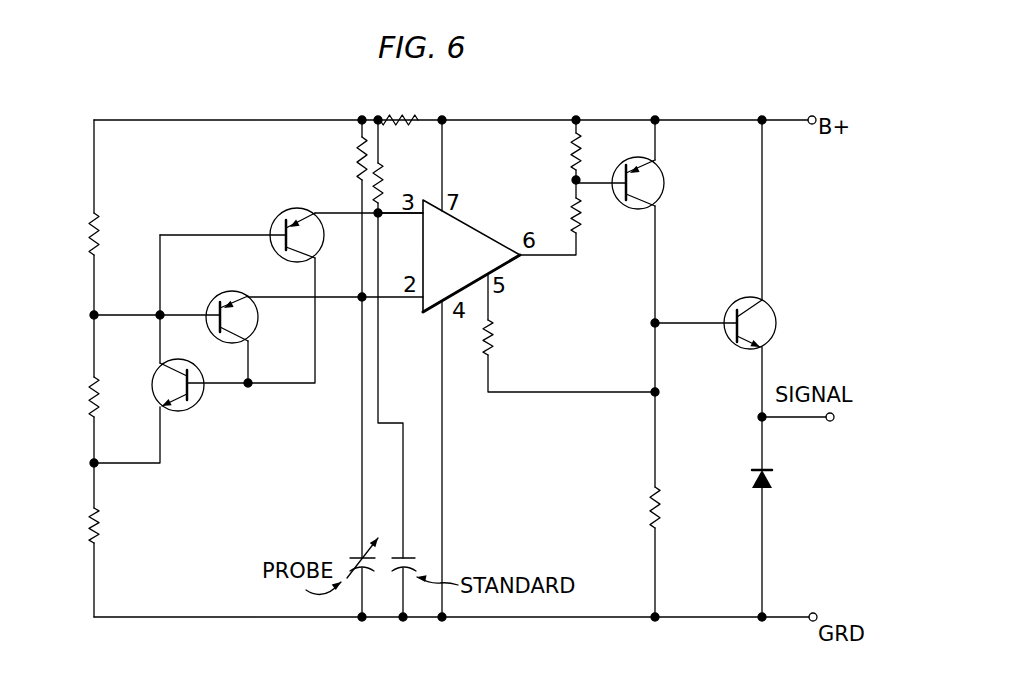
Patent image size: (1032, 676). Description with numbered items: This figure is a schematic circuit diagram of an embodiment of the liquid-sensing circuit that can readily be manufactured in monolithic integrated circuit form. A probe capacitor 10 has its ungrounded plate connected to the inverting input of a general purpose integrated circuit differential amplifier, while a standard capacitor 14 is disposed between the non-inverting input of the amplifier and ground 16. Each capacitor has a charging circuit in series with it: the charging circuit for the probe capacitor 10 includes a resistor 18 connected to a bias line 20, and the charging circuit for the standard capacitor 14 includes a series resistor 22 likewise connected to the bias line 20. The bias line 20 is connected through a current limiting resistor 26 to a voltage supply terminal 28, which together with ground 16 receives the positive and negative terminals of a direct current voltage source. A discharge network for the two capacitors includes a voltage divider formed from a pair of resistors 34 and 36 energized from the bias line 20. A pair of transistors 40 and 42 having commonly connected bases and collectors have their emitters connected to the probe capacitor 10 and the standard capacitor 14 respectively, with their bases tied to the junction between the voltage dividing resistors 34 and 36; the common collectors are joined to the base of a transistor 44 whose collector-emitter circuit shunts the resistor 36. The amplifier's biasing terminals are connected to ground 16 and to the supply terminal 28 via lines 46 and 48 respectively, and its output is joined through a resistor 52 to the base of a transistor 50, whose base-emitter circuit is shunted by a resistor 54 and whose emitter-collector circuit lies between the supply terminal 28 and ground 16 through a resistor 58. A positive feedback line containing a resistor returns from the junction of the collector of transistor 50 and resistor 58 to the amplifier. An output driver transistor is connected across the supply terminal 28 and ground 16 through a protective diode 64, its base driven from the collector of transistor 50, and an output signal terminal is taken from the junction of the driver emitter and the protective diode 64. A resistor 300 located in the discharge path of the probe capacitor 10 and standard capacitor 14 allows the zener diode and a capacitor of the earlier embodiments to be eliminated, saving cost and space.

The probe capacitor 10 is at (356, 554).
The standard capacitor 14 is at (405, 554).
The ground 16 is at (480, 618).
The resistor 18 is at (356, 163).
The bias line 20 is at (195, 120).
The resistor 22 is at (385, 184).
The current limiting resistor 26 is at (417, 114).
The voltage supply terminal 28 is at (814, 114).
The resistor 34 is at (120, 247).
The resistor 36 is at (118, 415).
The transistor 40 is at (244, 314).
The transistor 42 is at (282, 261).
The transistor 44 is at (184, 408).
The line 46 is at (443, 463).
The line 48 is at (443, 160).
The transistor 50 is at (657, 182).
The resistor 52 is at (600, 236).
The resistor 54 is at (600, 166).
The resistor 58 is at (659, 530).
The protective diode 64 is at (765, 491).
The resistor 300 is at (95, 547).